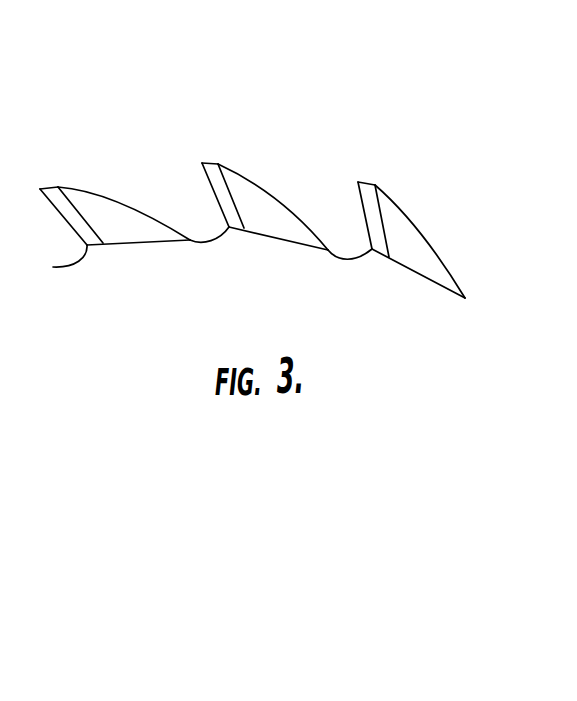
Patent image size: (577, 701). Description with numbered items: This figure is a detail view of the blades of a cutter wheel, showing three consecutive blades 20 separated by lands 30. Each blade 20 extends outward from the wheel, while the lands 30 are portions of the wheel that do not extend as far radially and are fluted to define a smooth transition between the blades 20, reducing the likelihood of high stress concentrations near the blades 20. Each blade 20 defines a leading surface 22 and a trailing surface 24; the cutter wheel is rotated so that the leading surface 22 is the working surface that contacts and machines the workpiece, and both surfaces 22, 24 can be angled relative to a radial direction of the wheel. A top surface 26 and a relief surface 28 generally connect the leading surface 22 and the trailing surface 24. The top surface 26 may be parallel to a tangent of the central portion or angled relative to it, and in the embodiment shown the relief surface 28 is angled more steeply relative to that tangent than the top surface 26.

The blade 20 is at (273, 226).
The leading surface 22 is at (213, 190).
The trailing surface 24 is at (287, 205).
The top surface 26 is at (208, 163).
The relief surface 28 is at (240, 175).
The land 30 is at (207, 238).